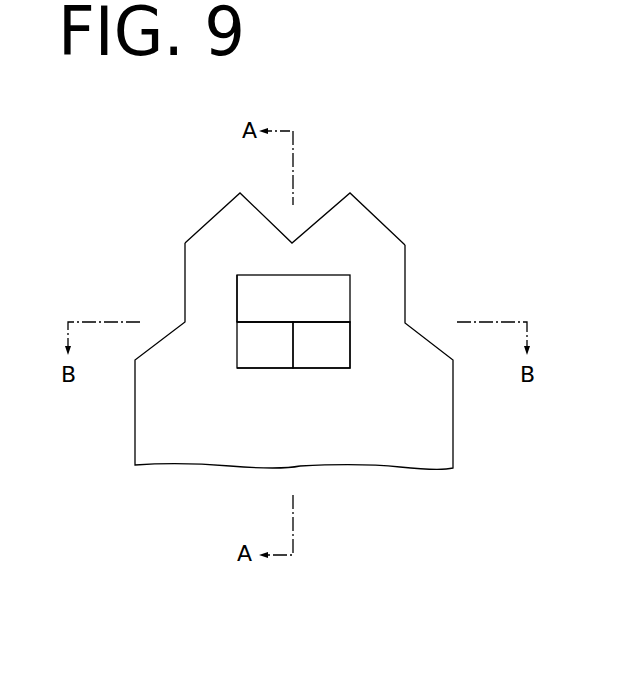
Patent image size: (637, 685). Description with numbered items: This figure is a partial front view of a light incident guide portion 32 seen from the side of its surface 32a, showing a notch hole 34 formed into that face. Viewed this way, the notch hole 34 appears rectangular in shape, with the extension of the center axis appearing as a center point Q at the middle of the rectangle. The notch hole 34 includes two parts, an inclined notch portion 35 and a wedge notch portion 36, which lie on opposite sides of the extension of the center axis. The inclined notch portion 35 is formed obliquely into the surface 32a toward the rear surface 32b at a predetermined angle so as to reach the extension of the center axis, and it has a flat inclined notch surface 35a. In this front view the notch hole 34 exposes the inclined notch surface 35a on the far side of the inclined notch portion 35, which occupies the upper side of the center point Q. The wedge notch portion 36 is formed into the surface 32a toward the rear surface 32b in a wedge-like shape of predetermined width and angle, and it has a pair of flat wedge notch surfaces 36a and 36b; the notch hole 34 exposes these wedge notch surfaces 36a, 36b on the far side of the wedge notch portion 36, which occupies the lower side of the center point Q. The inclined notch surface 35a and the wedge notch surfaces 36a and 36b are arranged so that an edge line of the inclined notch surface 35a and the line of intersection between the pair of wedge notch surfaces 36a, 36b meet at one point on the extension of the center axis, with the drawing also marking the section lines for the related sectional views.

The light incident guide portion 32 is at (296, 331).
The surface 32a is at (417, 422).
The rear surface 32b is at (157, 423).
The notch hole 34 is at (361, 337).
The inclined notch portion 35 is at (330, 299).
The inclined notch surface 35a is at (248, 293).
The wedge notch portion 36 is at (334, 396).
The wedge notch surface 36a is at (258, 355).
The wedge notch surface 36b is at (313, 355).
The center point Q is at (293, 322).